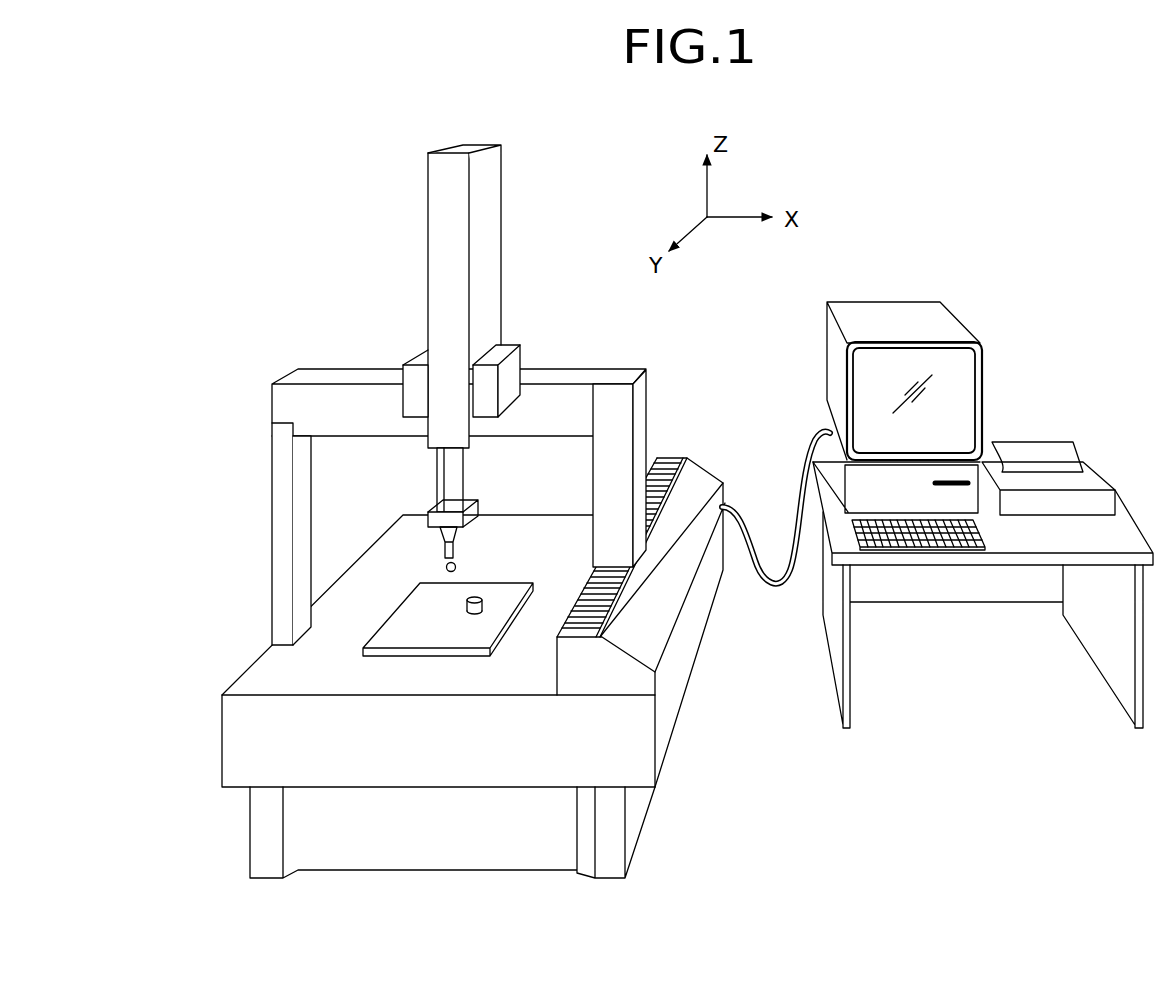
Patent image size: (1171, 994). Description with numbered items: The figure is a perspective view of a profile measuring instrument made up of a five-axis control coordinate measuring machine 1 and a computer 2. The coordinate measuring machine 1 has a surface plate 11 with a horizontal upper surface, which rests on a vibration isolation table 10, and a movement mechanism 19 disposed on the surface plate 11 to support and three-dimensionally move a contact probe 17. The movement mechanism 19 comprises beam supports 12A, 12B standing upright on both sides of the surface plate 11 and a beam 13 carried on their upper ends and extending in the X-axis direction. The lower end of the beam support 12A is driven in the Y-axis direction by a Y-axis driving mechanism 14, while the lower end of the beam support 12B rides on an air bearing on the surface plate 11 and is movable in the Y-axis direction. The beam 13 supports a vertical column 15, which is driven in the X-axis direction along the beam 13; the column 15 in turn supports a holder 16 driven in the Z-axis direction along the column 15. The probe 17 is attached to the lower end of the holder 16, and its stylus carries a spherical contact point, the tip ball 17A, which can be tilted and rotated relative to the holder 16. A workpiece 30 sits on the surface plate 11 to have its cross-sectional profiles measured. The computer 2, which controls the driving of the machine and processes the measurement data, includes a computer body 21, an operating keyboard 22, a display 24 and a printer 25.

The coordinate measuring machine 1 is at (323, 188).
The computer 2 is at (980, 250).
The vibration isolation table 10 is at (255, 847).
The surface plate 11 is at (260, 677).
The beam support 12A is at (648, 385).
The beam support 12B is at (272, 446).
The beam 13 is at (350, 377).
The Y-axis driving mechanism 14 is at (710, 468).
The column 15 is at (427, 218).
The holder 16 is at (477, 500).
The contact probe 17 is at (445, 550).
The tip ball 17A is at (447, 570).
The movement mechanism 19 is at (297, 338).
The computer body 21 is at (818, 422).
The operating keyboard 22 is at (985, 537).
The display 24 is at (982, 362).
The printer 25 is at (1045, 443).
The workpiece 30 is at (473, 600).